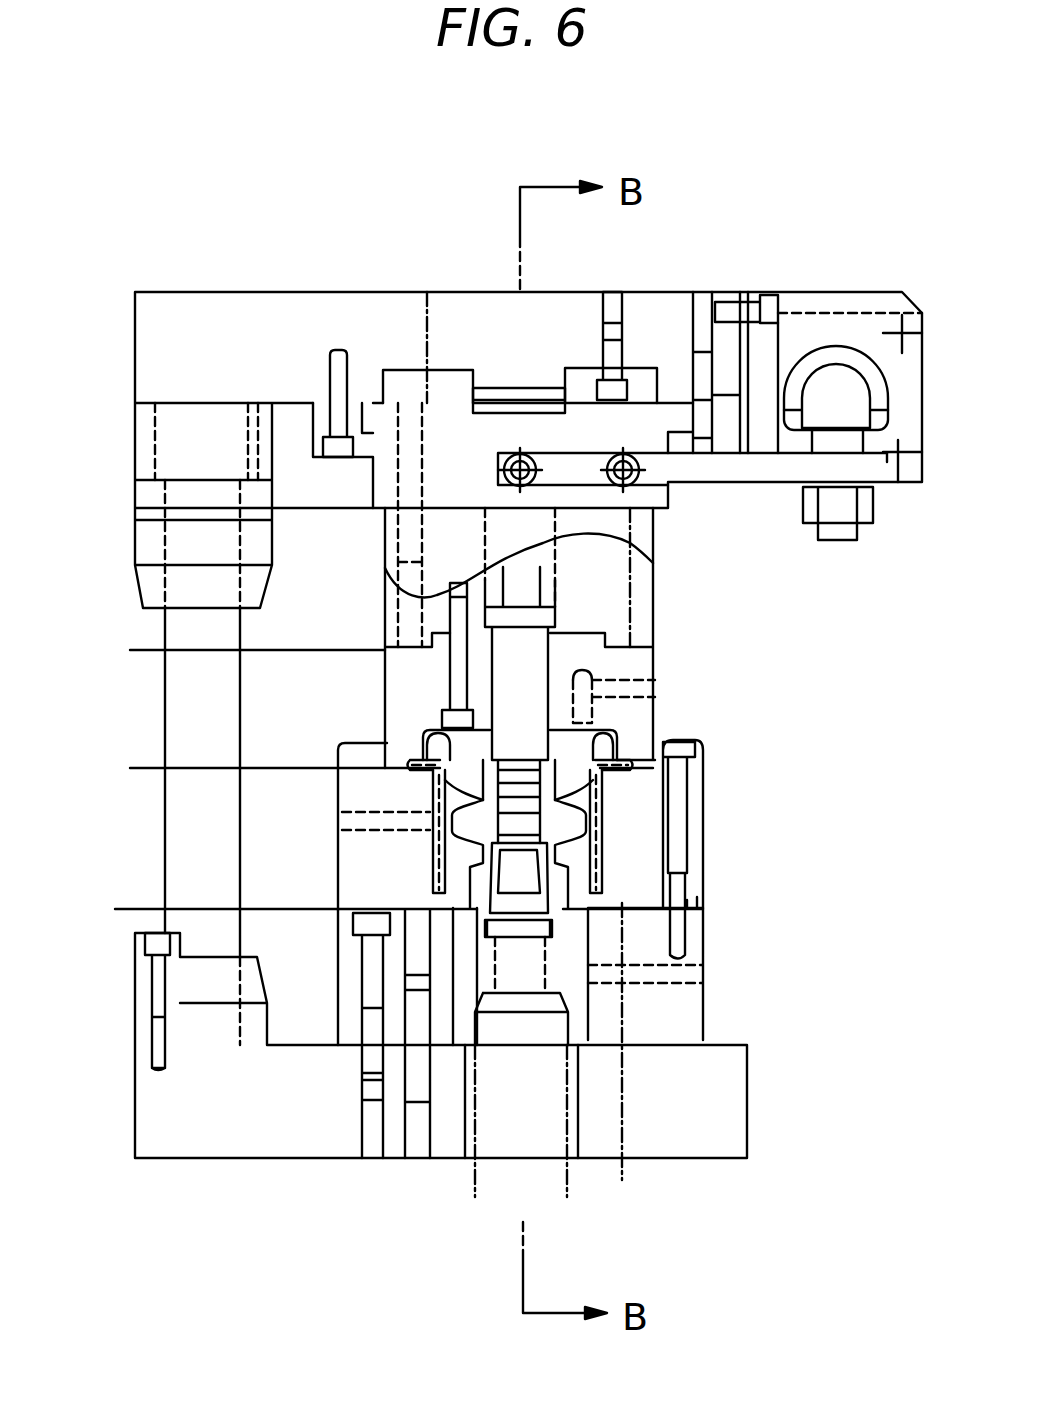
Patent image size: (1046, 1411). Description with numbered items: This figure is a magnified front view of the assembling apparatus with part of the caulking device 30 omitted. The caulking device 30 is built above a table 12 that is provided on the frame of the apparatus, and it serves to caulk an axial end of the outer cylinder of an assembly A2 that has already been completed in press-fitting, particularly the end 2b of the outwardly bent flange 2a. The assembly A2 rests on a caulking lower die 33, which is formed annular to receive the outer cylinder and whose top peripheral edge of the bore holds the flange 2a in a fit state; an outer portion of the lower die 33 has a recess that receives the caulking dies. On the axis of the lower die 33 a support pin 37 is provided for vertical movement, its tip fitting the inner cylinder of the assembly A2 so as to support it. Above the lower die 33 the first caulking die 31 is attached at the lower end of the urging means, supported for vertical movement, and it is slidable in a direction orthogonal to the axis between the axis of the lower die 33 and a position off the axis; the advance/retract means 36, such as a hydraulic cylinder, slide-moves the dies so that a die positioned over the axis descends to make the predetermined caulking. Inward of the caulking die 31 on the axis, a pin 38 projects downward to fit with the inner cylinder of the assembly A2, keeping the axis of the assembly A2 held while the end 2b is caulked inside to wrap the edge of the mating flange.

The caulking device 30 is at (217, 246).
The advance/retract means 36 is at (853, 330).
The first caulking die 31 is at (640, 665).
The pin 38 is at (512, 692).
The end 2b is at (627, 757).
The flange 2a is at (615, 770).
The assembly A2 is at (428, 852).
The support pin 37 is at (520, 960).
The caulking lower die 33 is at (697, 836).
The table 12 is at (673, 1140).